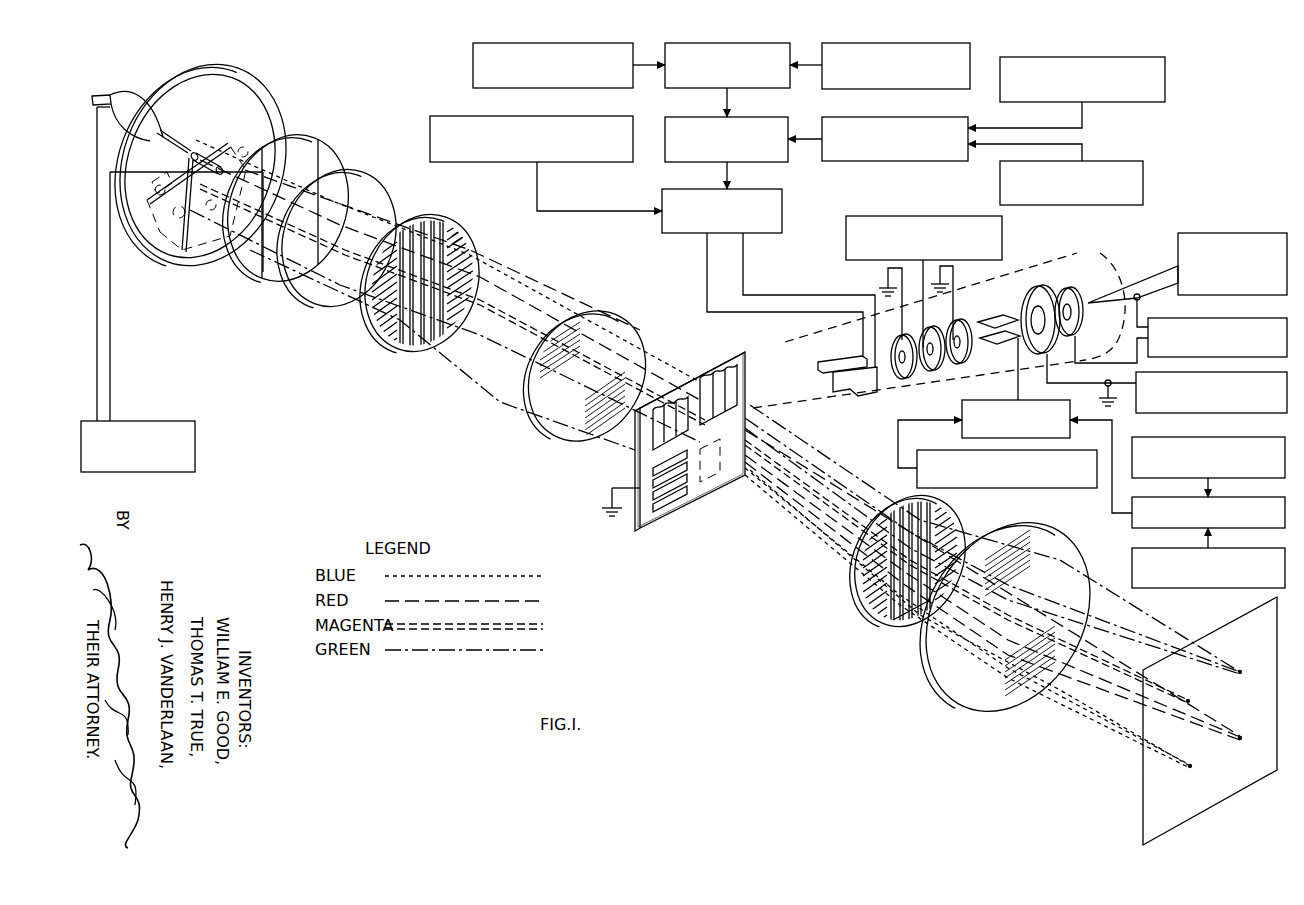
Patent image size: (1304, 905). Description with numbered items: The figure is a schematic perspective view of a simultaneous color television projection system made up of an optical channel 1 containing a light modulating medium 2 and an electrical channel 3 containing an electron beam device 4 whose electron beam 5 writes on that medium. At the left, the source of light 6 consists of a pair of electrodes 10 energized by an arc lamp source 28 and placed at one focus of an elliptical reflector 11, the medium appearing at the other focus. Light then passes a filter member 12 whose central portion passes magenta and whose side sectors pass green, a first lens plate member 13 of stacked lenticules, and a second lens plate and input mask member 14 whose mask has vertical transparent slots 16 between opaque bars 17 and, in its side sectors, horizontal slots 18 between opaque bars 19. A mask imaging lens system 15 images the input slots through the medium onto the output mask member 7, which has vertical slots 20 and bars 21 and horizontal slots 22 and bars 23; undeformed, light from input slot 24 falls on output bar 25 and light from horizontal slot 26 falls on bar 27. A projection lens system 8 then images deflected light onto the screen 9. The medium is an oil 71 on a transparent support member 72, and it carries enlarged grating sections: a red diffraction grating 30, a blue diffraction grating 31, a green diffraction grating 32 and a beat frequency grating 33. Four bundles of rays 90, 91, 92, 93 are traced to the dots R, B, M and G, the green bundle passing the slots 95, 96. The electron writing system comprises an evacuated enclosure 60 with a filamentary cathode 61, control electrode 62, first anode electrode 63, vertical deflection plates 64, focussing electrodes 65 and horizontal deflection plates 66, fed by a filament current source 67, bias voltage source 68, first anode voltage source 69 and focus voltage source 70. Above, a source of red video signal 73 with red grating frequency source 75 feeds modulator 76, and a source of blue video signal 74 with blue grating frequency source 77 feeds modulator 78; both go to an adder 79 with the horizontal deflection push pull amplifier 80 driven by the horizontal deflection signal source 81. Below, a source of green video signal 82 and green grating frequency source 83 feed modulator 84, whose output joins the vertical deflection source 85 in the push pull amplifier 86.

The optical channel 1 is at (556, 303).
The light modulating medium 2 is at (643, 470).
The electrical channel 3 is at (1231, 160).
The electron beam device 4 is at (1083, 241).
The electron beam 5 is at (790, 397).
The source of light 6 is at (177, 107).
The output mask member 7 is at (881, 630).
The projection lens system 8 is at (975, 711).
The screen 9 is at (1143, 768).
The pair of electrodes 10 is at (192, 133).
The elliptical reflector 11 is at (254, 72).
The filter member 12 is at (243, 297).
The first lens plate member 13 is at (314, 306).
The second lens plate and input mask member 14 is at (410, 355).
The mask imaging lens system 15 is at (541, 424).
The vertically extending transparent slots 16 is at (444, 216).
The vertically extending opaque bars 17 is at (441, 328).
The horizontally oriented slots 18 is at (466, 264).
The parallel opaque bars 19 is at (458, 230).
The vertically extending transparent slots 20 is at (899, 520).
The vertically extending opaque bars 21 is at (900, 626).
The horizontally extending transparent slots 22 is at (872, 622).
The horizontally extending opaque bars 23 is at (866, 577).
The input slot 24 is at (420, 228).
The output bar 25 is at (907, 510).
The horizontal slot 26 is at (388, 334).
The bar 27 is at (945, 514).
The source 28 is at (195, 448).
The red diffraction grating 30 is at (674, 400).
The blue diffraction grating 31 is at (718, 375).
The green diffraction grating 32 is at (676, 503).
The beat frequency grating 33 is at (725, 470).
The evacuated enclosure 60 is at (1117, 274).
The filamentary cathode 61 is at (1097, 309).
The control electrode 62 is at (1072, 294).
The first anode electrode 63 is at (1034, 290).
The vertical deflection plates 64 is at (991, 308).
The focussing electrodes 65 is at (966, 389).
The horizontal deflection plates 66 is at (831, 388).
The filament current source 67 is at (1223, 232).
The bias voltage source 68 is at (1183, 320).
The first anode voltage source 69 is at (1160, 413).
The focus voltage source 70 is at (846, 249).
The oil 71 is at (652, 524).
The transparent support member 72 is at (636, 525).
The source of red video signal 73 is at (1165, 80).
The source of blue video signal 74 is at (473, 66).
The red grating frequency source 75 is at (1143, 181).
The modulator 76 is at (893, 161).
The blue grating frequency source 77 is at (840, 93).
The modulator 78 is at (665, 93).
The adder 79 is at (665, 165).
The horizontal deflection push pull amplifier 80 is at (687, 236).
The horizontal deflection signal source 81 is at (561, 164).
The source of green video signal 82 is at (1228, 437).
The green grating frequency source 83 is at (1210, 588).
The modulator 84 is at (1134, 529).
The vertical deflection source 85 is at (1072, 488).
The push pull amplifier 86 is at (962, 436).
The first bundle of rays 90 is at (221, 168).
The second bundle of rays 91 is at (175, 209).
The third bundle of rays 92 is at (212, 209).
The fourth bundle of rays 93 is at (157, 181).
The slot 95 is at (945, 526).
The slot 96 is at (937, 510).